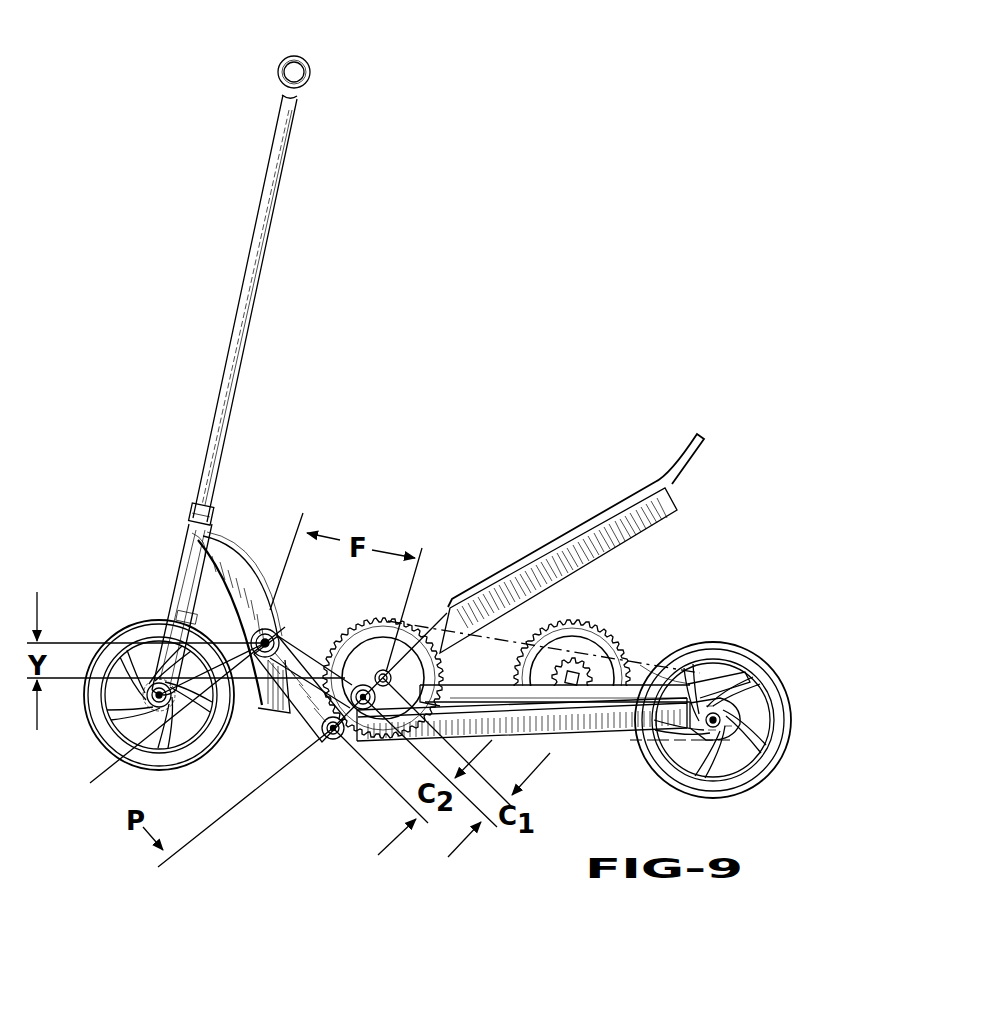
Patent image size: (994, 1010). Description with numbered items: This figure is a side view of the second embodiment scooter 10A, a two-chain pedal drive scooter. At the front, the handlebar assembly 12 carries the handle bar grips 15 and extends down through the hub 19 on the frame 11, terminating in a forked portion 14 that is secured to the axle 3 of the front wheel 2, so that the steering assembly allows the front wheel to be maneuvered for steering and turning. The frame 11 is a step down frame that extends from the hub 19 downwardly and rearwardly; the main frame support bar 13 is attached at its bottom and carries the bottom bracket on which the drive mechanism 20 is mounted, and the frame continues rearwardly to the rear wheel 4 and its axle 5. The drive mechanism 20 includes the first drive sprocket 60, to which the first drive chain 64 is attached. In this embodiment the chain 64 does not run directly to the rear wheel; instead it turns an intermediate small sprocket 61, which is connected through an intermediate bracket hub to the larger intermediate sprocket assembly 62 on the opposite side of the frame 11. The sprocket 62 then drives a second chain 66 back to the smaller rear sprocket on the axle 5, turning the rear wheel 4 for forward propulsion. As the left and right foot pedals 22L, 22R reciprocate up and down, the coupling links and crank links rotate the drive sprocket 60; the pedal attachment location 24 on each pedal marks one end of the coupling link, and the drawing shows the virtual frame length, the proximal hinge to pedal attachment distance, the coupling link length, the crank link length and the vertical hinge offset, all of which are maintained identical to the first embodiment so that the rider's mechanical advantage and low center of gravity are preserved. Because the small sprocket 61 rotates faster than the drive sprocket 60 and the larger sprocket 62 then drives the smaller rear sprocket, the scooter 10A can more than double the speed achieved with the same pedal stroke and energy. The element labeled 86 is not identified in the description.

The second embodiment scooter 10A is at (115, 280).
The handle bar grips 15 is at (309, 61).
The handlebar assembly 12 is at (218, 400).
The hub 19 is at (196, 540).
The forked portion 14 is at (183, 613).
The front wheel 2 is at (117, 744).
The axle 3 is at (178, 700).
The frame 11 is at (262, 703).
The pedal attachment location 24 is at (326, 727).
The pivot 86 is at (363, 710).
The drive sprocket 60 is at (357, 651).
The intermediate sprocket assembly 62 is at (598, 647).
The intermediate small sprocket 61 is at (572, 700).
The drive chain 64 is at (498, 642).
The second chain 66 is at (643, 655).
The drive mechanism 20 is at (424, 607).
The right foot pedal 22R is at (575, 525).
The left foot pedal 22L is at (662, 692).
The main frame support bar 13 is at (590, 716).
The rear wheel 4 is at (786, 692).
The axle 5 is at (721, 729).